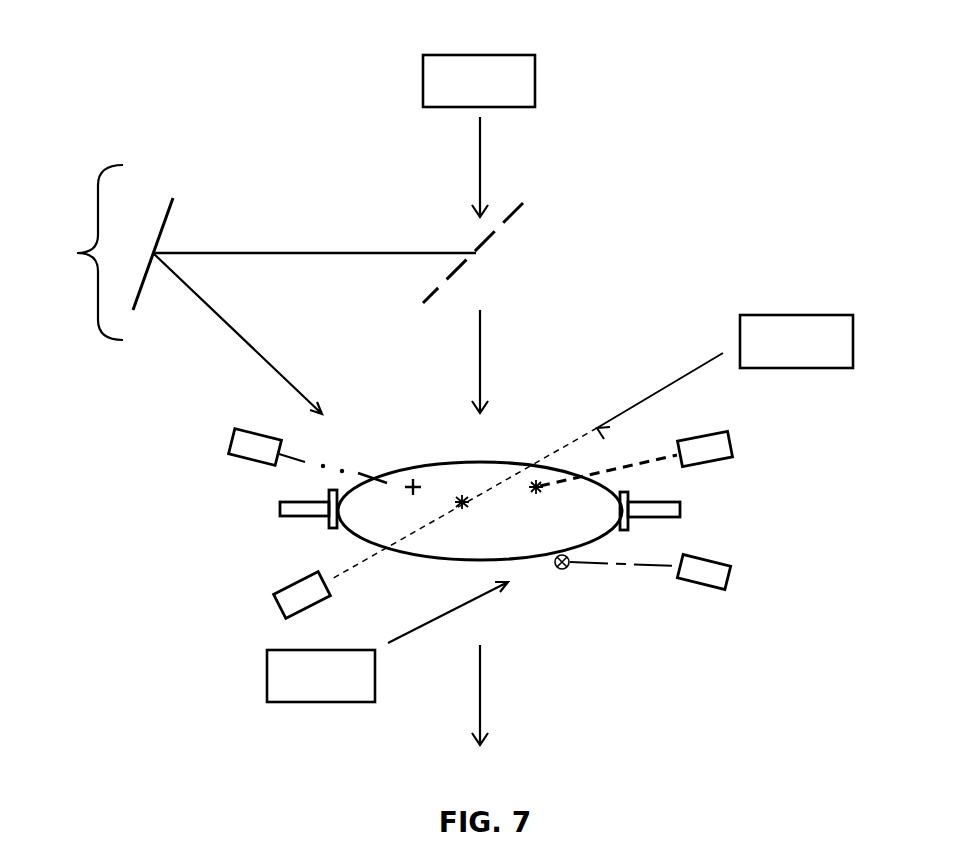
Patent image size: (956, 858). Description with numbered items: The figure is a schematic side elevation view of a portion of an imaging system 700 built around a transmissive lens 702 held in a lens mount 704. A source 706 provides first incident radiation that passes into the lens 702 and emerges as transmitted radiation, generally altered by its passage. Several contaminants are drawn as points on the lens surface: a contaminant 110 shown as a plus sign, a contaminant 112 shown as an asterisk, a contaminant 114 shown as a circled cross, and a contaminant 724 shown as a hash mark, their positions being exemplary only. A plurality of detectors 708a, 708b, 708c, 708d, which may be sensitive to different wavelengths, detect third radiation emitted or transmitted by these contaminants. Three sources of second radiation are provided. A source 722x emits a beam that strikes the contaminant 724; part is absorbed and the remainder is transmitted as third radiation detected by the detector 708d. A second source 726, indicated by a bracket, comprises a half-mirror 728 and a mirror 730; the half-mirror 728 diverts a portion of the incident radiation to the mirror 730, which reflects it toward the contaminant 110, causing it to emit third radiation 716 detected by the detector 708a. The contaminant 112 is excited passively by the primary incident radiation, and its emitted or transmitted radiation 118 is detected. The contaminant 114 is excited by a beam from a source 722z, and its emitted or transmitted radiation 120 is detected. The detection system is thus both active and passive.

The imaging system 700 is at (162, 78).
The transmissive lens 702 is at (463, 543).
The lens mount 704 is at (280, 508).
The source of first incident radiation 706 is at (453, 94).
The detector 708a is at (246, 446).
The detector 708b is at (712, 446).
The detector 708c is at (718, 574).
The detector 708d is at (292, 597).
The contaminant 110 is at (414, 486).
The contaminant 112 is at (540, 492).
The contaminant 114 is at (558, 569).
The emitted or transmitted radiation 118 is at (640, 463).
The emitted or transmitted radiation 120 is at (637, 568).
The third radiation 716 is at (352, 472).
The source of second radiation 722x is at (762, 356).
The source of second radiation 722z is at (286, 689).
The contaminant 724 is at (462, 495).
The second source of second radiation 726 is at (76, 253).
The half-mirror 728 is at (528, 224).
The mirror 730 is at (168, 218).